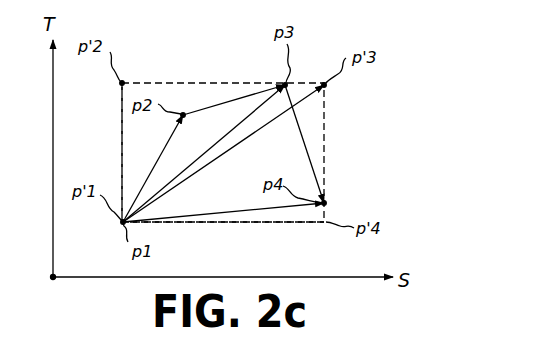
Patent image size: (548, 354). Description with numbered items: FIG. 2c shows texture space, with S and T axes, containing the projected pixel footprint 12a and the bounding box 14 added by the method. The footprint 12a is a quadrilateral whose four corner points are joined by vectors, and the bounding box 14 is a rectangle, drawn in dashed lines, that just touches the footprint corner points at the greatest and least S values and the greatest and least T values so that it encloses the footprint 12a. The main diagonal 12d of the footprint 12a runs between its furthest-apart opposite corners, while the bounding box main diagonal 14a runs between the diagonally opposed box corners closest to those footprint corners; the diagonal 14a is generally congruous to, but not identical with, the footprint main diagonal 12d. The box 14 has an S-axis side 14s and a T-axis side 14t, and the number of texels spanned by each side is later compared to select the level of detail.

The bounding box 14 is at (154, 83).
The T-axis side of bounding box 14t is at (121, 142).
The S-axis side of bounding box 14s is at (250, 222).
The pixel footprint 12a is at (155, 166).
The footprint main diagonal 12d is at (235, 126).
The bounding box main diagonal 14a is at (227, 151).